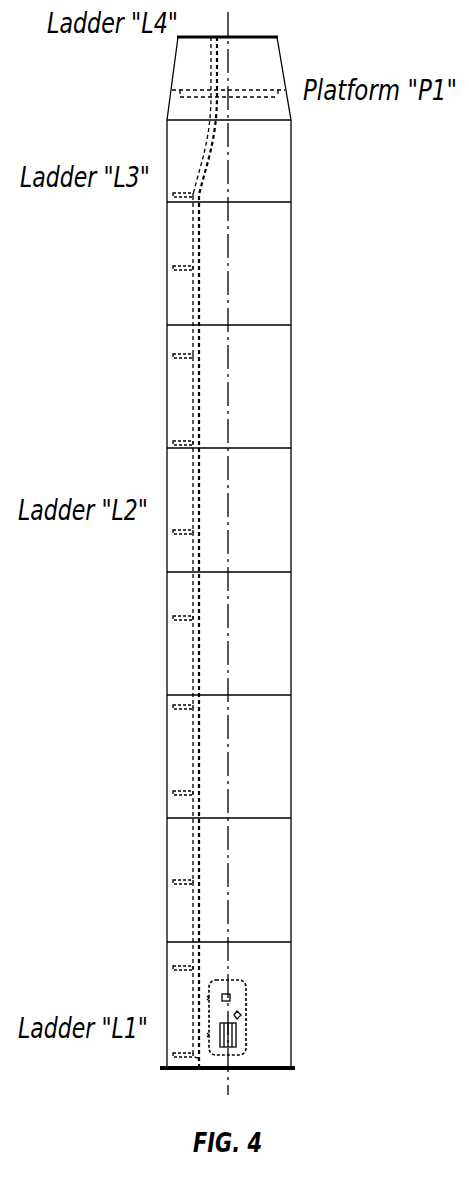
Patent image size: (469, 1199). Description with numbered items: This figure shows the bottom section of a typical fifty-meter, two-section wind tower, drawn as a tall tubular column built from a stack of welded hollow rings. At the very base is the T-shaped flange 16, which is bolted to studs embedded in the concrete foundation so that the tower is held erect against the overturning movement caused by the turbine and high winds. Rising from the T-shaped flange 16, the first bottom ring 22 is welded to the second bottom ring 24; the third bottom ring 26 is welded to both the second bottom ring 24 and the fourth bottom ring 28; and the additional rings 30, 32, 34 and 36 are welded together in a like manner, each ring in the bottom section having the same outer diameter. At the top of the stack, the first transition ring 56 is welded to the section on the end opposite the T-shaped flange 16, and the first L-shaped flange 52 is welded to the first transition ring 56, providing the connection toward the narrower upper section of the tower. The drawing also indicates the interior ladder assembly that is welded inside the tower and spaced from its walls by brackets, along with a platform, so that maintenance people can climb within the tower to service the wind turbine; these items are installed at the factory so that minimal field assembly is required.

The T-shaped flange 16 is at (265, 1069).
The first bottom ring 22 is at (291, 1007).
The second bottom ring 24 is at (291, 882).
The third bottom ring 26 is at (291, 758).
The fourth bottom ring 28 is at (291, 635).
The additional ring 30 is at (291, 512).
The additional ring 32 is at (291, 388).
The additional ring 34 is at (291, 265).
The additional ring 36 is at (292, 162).
The first L-shaped flange 52 is at (253, 34).
The first transition ring 56 is at (173, 80).